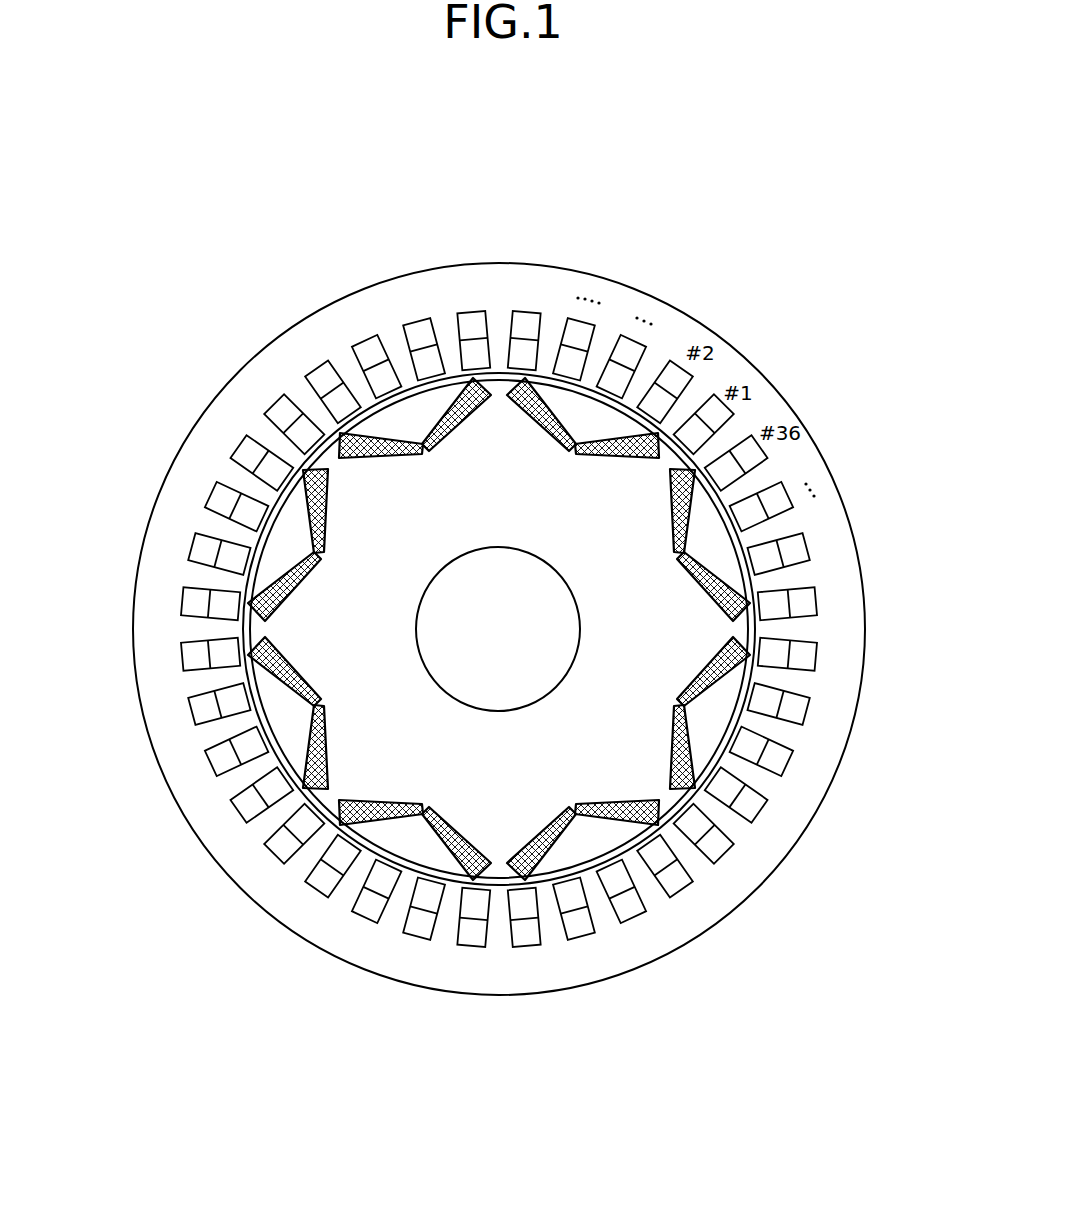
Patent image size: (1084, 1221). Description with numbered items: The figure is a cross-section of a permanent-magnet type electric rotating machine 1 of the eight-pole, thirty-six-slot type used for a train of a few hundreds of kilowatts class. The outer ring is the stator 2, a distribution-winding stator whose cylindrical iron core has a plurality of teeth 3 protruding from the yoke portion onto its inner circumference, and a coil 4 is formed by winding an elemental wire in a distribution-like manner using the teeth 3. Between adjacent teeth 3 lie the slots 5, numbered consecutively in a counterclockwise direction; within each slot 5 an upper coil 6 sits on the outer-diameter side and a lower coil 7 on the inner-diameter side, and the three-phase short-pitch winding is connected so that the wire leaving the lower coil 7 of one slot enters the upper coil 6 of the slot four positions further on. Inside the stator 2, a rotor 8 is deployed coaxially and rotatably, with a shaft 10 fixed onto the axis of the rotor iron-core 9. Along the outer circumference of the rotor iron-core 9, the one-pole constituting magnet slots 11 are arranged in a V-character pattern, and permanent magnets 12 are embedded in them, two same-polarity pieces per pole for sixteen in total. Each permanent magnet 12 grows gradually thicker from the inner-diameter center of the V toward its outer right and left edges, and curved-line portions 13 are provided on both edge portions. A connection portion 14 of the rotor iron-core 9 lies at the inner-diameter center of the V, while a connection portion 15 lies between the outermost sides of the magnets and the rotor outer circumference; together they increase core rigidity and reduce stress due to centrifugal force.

The permanent-magnet type electric rotating machine 1 is at (689, 248).
The stator 2 is at (790, 385).
The teeth 3 is at (790, 526).
The coil 4 is at (507, 240).
The slot 5 is at (368, 343).
The upper coil 6 is at (528, 344).
The lower coil 7 is at (470, 344).
The rotor 8 is at (810, 712).
The rotor iron-core 9 is at (405, 741).
The shaft 10 is at (497, 548).
The 1-pole constituting magnet slots 11 is at (630, 822).
The permanent magnets 12 is at (612, 800).
The curved-line portions 13 is at (302, 557).
The connection portion 14 is at (215, 740).
The connection portion 15 is at (262, 820).